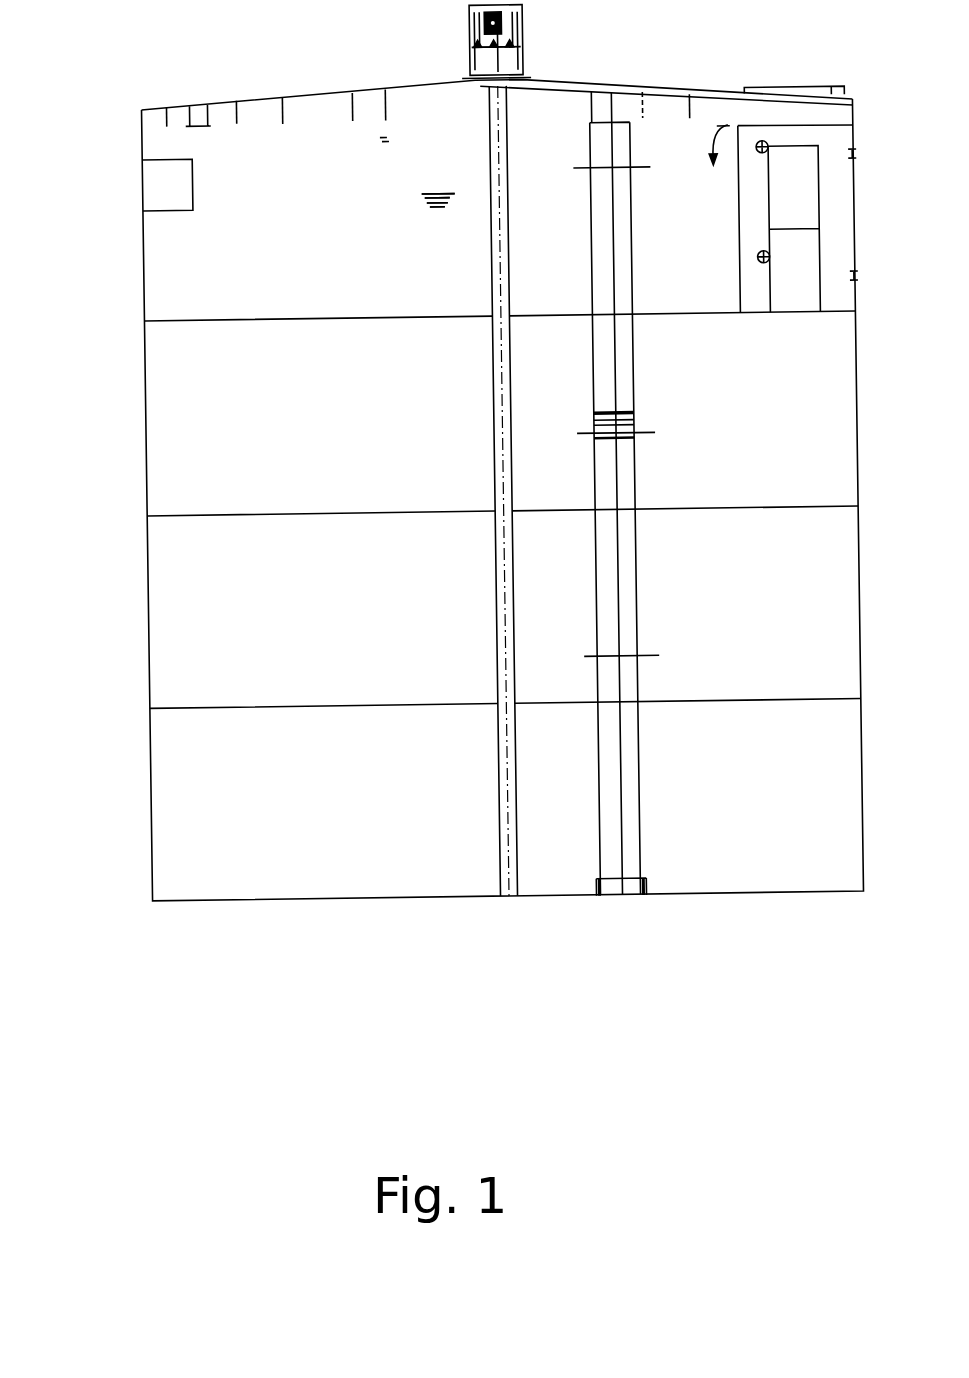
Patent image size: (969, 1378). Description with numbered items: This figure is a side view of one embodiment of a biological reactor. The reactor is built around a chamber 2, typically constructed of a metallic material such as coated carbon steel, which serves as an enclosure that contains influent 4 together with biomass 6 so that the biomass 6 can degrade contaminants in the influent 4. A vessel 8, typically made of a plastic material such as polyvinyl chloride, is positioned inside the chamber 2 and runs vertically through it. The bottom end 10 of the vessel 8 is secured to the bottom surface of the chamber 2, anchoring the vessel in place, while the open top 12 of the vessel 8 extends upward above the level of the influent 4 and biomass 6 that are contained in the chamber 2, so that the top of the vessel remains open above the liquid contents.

The chamber 2 is at (147, 432).
The influent 4 is at (430, 211).
The biomass 6 is at (438, 200).
The vessel 8 is at (641, 482).
The bottom end 10 is at (622, 897).
The open top 12 is at (622, 124).